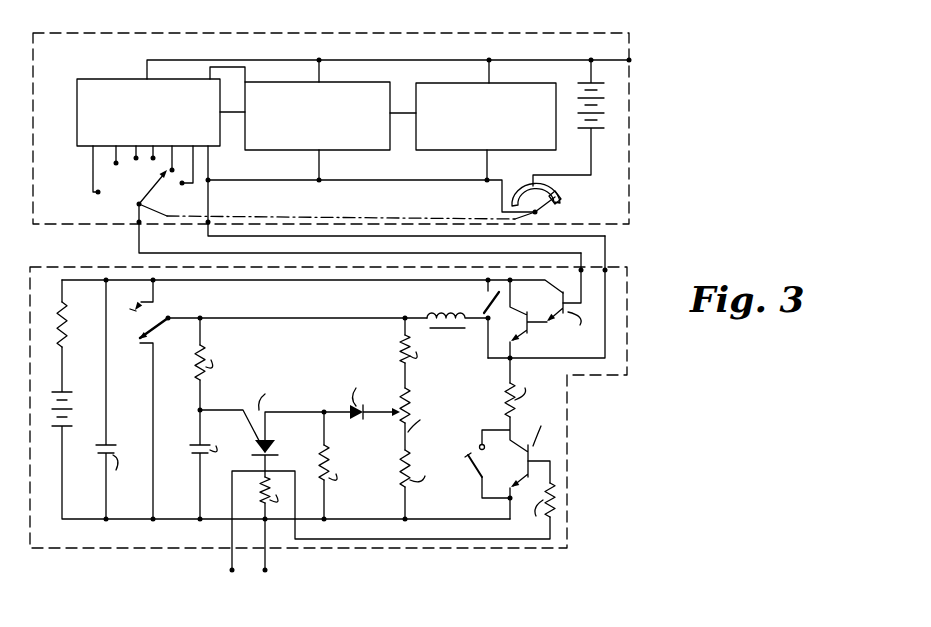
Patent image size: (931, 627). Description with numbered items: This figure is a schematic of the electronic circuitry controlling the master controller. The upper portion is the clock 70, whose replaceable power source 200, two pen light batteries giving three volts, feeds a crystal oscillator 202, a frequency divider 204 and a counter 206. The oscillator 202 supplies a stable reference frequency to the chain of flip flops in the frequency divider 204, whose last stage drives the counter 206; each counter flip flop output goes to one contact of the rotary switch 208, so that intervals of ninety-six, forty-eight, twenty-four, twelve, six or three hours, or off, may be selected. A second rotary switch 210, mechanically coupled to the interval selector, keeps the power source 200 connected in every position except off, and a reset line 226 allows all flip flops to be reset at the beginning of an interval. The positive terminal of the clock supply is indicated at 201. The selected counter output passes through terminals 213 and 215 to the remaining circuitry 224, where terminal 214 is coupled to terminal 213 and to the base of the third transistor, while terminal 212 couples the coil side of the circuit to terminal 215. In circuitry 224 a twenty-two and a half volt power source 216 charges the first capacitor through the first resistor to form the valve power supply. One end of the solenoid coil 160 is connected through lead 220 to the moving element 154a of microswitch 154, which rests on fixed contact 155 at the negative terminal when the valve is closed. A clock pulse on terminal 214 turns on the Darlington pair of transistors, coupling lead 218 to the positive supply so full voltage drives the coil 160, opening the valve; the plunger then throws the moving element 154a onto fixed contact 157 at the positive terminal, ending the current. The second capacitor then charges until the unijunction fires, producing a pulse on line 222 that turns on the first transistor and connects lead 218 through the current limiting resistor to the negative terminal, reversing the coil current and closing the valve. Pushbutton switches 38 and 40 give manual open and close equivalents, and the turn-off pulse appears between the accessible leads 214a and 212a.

The clock 70 is at (629, 88).
The counter 206 is at (109, 79).
The reset line 226 is at (236, 67).
The frequency divider 204 is at (292, 82).
The oscillator 202 is at (463, 83).
The power source 200 is at (601, 118).
The positive terminal 201 is at (629, 60).
The second rotary switch 210 is at (575, 210).
The rotary switch 208 is at (131, 211).
The terminal 215 is at (207, 228).
The terminal 213 is at (337, 234).
The terminal 214 is at (581, 262).
The terminal 212 is at (611, 267).
The remaining circuitry 224 is at (629, 326).
The power source 216 is at (93, 382).
The microswitch 154 is at (156, 308).
The moving element 154a is at (136, 338).
The fixed contact 157 is at (140, 306).
The fixed contact 155 is at (143, 340).
The lead 220 is at (300, 318).
The solenoid coil 160 is at (441, 317).
The pushbutton switch 38 is at (494, 297).
The lead 218 is at (488, 346).
The pushbutton switch 40 is at (499, 463).
The line 222 is at (552, 479).
The lead 214a is at (232, 570).
The lead 212a is at (265, 570).